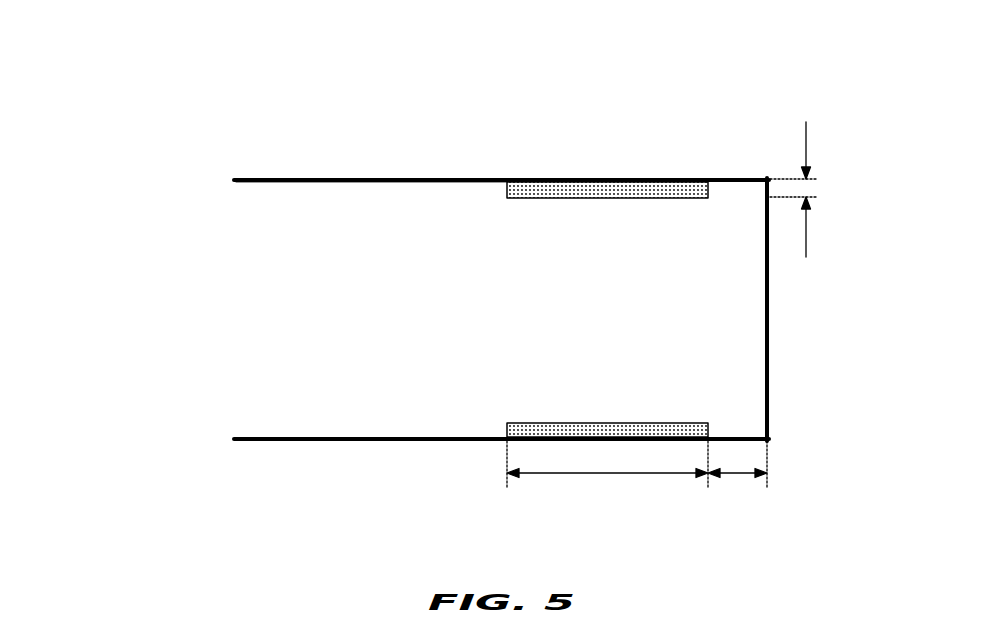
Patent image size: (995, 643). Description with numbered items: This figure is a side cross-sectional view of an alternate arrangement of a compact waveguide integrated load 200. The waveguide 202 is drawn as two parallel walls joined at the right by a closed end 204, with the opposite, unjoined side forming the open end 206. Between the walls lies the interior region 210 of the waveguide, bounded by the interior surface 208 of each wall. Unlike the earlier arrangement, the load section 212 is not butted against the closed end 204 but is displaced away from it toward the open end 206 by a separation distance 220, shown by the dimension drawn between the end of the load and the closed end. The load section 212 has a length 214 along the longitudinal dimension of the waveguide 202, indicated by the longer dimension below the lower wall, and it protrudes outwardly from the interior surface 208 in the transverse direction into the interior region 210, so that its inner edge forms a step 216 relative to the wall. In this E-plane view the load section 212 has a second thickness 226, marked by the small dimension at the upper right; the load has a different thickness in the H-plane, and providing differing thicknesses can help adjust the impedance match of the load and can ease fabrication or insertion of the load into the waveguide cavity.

The compact waveguide integrated load 200 is at (495, 285).
The waveguide 202 is at (307, 441).
The closed end 204 is at (770, 310).
The open end 206 is at (218, 328).
The interior surface 208 is at (280, 183).
The interior region 210 is at (461, 340).
The load section 212 is at (635, 187).
The length 214 is at (617, 473).
The step 216 is at (510, 191).
The separation distance 220 is at (735, 473).
The second thickness 226 is at (818, 189).